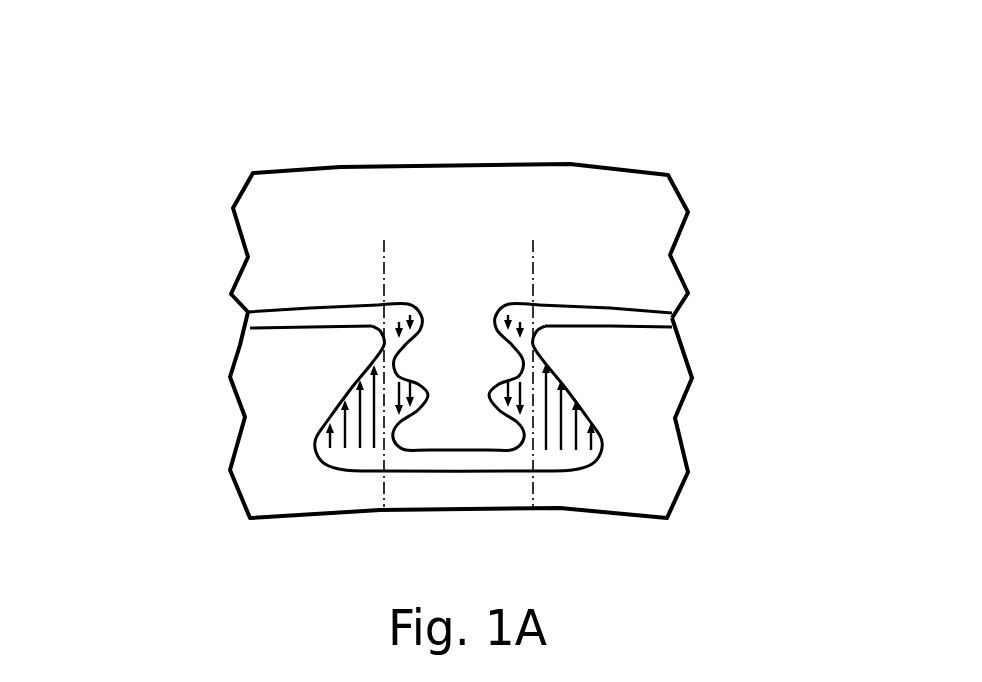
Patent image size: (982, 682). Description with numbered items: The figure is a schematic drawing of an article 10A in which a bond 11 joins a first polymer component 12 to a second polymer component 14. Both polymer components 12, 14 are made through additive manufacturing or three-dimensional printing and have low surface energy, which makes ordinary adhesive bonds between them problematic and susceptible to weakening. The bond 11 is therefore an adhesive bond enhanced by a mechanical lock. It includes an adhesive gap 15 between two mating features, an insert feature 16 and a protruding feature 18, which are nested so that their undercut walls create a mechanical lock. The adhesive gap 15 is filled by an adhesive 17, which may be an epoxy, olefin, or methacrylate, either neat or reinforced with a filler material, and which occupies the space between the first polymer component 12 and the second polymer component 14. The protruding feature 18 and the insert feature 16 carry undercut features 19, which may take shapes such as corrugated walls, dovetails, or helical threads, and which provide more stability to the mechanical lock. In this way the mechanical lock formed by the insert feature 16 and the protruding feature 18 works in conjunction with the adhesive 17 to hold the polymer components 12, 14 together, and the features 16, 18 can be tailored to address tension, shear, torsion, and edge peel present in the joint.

The article 10A is at (80, 60).
The bond 11 is at (192, 282).
The first polymer component 12 is at (338, 236).
The second polymer component 14 is at (297, 385).
The adhesive gap 15 is at (684, 318).
The insert feature 16 is at (554, 462).
The adhesive 17 is at (628, 317).
The protruding feature 18 is at (455, 357).
The undercut features 19 is at (597, 415).